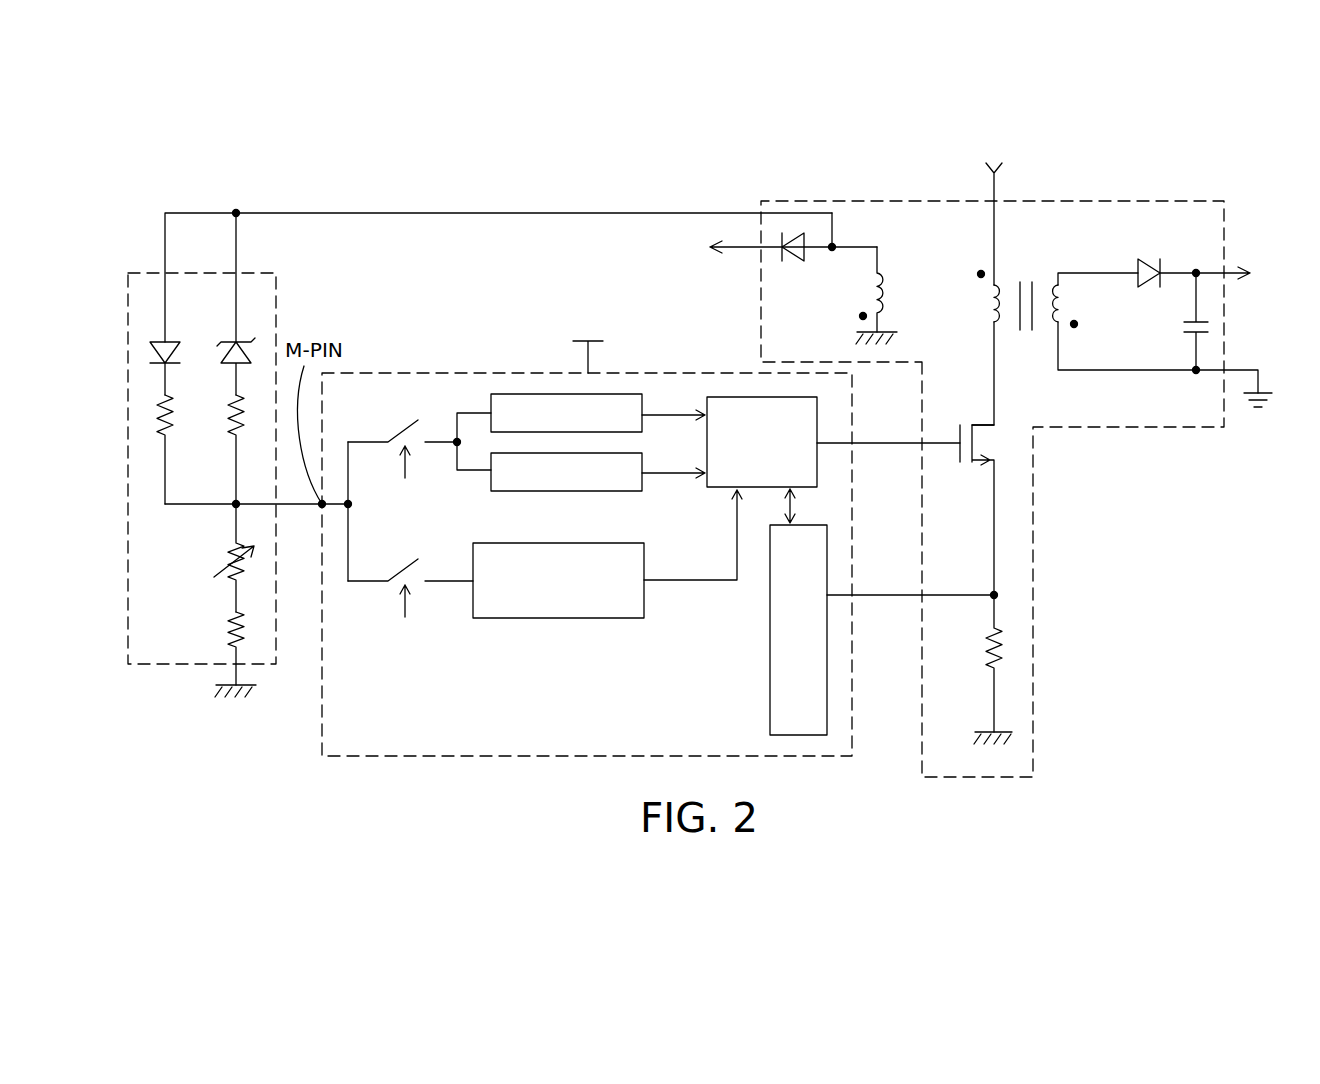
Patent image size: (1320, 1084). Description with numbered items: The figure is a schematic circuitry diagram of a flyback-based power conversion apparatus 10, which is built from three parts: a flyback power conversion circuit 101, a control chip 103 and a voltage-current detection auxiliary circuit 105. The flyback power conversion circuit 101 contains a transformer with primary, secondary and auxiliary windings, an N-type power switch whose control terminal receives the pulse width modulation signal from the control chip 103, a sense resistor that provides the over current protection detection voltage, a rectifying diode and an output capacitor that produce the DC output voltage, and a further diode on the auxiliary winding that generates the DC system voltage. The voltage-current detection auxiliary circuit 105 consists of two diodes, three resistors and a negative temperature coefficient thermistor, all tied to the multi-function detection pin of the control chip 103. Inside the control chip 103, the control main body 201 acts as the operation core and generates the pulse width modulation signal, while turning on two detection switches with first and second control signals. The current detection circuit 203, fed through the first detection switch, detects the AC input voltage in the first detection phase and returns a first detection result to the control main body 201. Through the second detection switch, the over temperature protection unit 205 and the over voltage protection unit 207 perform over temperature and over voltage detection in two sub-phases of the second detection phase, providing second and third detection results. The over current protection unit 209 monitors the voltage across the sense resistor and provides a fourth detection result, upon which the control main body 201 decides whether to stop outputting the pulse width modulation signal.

The power conversion apparatus 10 is at (1242, 786).
The flyback power conversion circuit 101 is at (1112, 201).
The control chip 103 is at (455, 373).
The voltage-current detection auxiliary circuit 105 is at (255, 273).
The control main body 201 is at (745, 397).
The current detection circuit 203 is at (575, 543).
The over temperature protection unit 205 is at (540, 394).
The over voltage protection unit 207 is at (540, 492).
The over current protection unit 209 is at (770, 635).